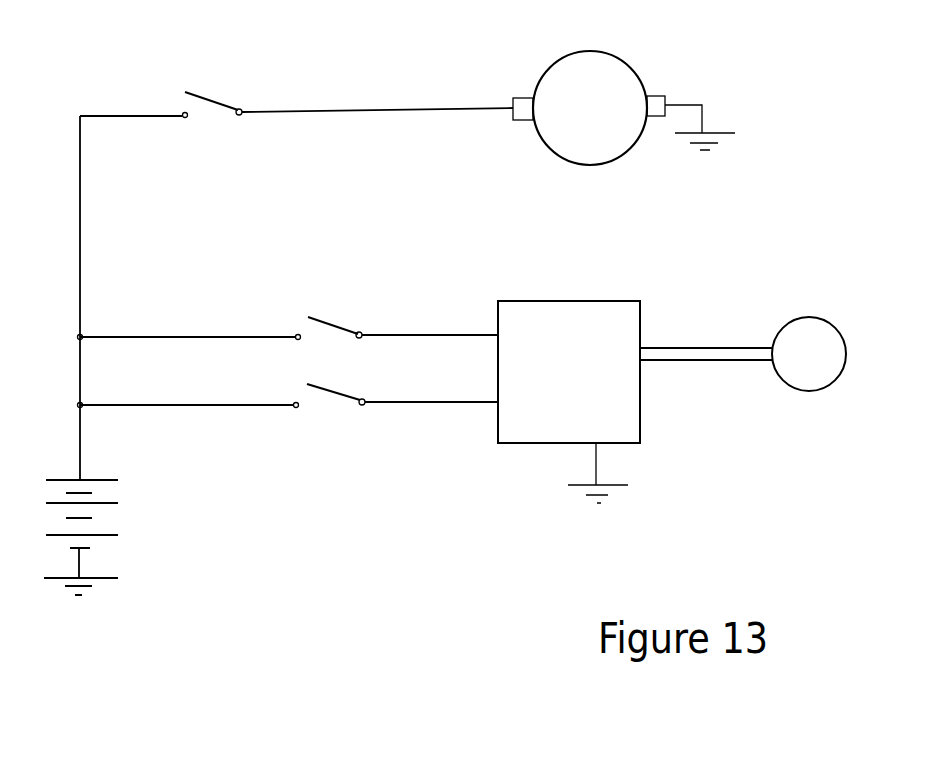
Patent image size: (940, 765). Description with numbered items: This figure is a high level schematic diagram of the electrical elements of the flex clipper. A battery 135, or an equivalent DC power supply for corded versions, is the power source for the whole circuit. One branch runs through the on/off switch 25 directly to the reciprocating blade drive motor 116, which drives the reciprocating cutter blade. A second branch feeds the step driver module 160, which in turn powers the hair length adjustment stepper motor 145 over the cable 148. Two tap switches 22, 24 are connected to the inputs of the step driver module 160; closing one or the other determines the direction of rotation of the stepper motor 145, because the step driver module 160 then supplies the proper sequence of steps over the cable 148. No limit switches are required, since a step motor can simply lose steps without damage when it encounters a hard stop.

The switch 25 is at (234, 78).
The reciprocating blade drive motor 116 is at (605, 67).
The tap switch 22 is at (338, 310).
The counter-clockwise switch 24 is at (325, 408).
The step driver module 160 is at (585, 305).
The cable 148 is at (688, 337).
The hair length adjustment stepper motor 145 is at (833, 318).
The battery 135 is at (135, 512).